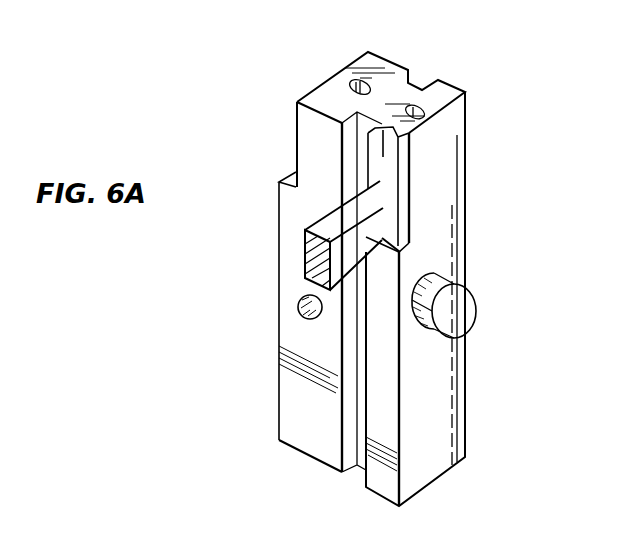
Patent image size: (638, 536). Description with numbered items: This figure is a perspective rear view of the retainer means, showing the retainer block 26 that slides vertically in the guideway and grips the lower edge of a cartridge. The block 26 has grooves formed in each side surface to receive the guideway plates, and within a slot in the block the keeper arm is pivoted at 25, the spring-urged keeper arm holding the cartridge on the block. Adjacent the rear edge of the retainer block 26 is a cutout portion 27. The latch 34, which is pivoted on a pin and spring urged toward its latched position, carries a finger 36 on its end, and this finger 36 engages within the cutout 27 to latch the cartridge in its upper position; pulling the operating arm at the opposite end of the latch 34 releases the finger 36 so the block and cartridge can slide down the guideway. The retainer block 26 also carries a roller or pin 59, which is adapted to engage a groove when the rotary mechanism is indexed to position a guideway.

The retainer block 26 is at (453, 143).
The cutout portion 27 is at (373, 176).
The finger 36 is at (382, 217).
The latch 34 is at (317, 229).
The pivot of keeper arm 25 is at (300, 310).
The roller or pin 59 is at (462, 307).